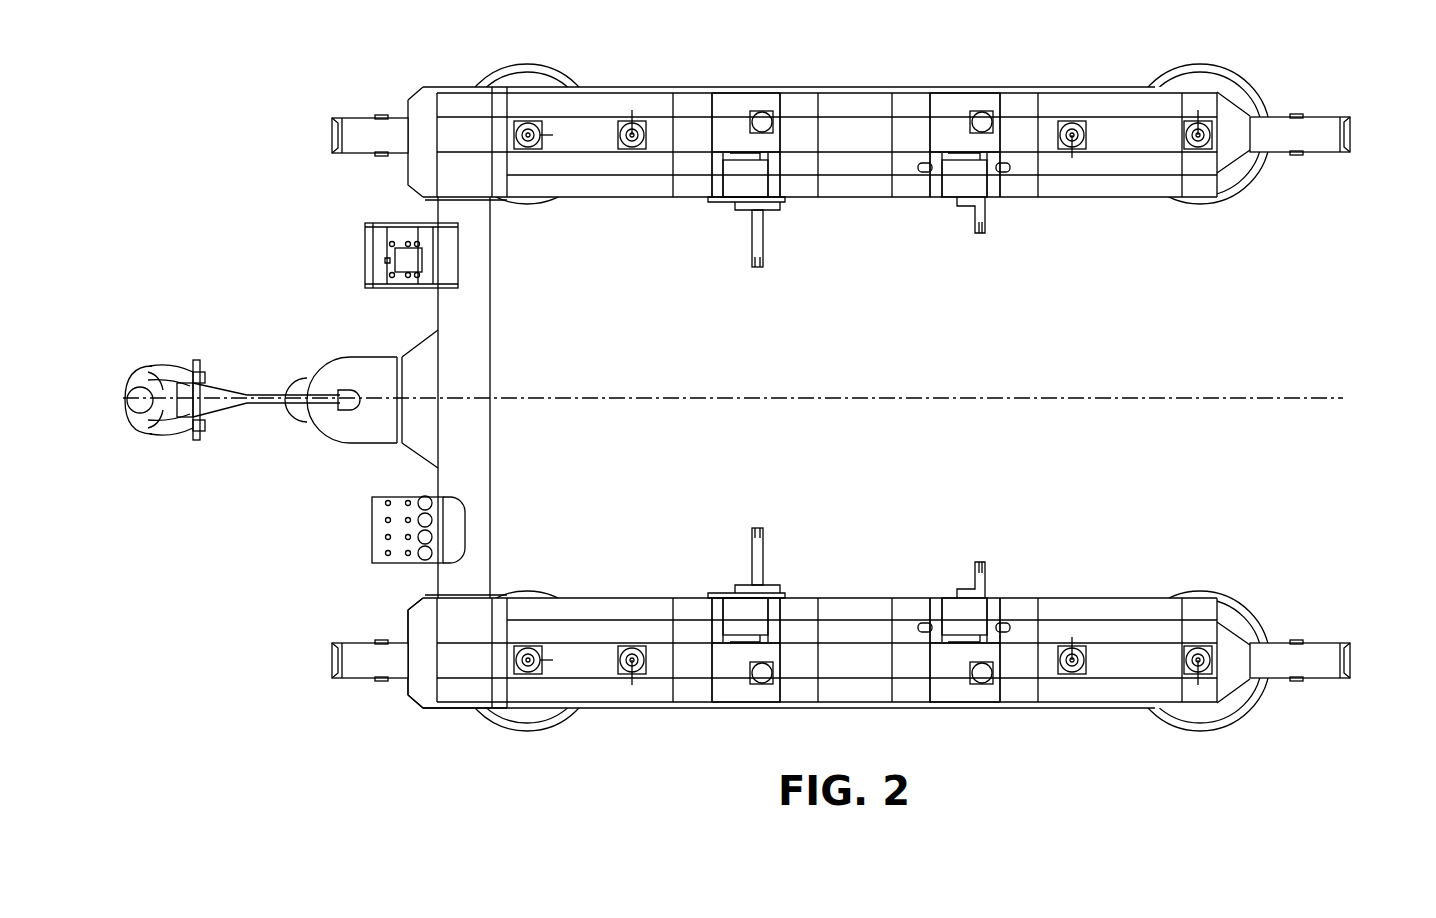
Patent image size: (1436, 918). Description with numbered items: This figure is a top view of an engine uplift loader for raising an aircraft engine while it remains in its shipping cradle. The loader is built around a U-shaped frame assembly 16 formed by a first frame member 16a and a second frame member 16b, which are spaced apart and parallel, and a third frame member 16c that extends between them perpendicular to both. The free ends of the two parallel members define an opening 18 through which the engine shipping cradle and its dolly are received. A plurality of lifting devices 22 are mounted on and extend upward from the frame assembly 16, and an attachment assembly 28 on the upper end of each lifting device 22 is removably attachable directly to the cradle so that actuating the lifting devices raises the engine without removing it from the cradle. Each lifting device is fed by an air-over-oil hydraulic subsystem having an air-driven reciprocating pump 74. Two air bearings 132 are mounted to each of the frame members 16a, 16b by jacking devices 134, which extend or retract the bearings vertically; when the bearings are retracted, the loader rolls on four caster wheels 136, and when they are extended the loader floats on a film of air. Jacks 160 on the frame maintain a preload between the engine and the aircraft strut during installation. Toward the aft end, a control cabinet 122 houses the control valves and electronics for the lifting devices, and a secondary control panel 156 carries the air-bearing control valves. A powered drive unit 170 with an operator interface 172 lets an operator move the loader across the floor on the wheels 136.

The frame assembly 16 is at (414, 706).
The first frame member 16a is at (868, 165).
The second frame member 16b is at (1130, 605).
The third frame member 16c is at (480, 320).
The opening 18 is at (1310, 378).
The lifting device 22 is at (738, 100).
The attachment assembly 28 is at (763, 245).
The air-driven reciprocating pump 74 is at (762, 112).
The control cabinet 122 is at (365, 251).
The air bearing 132 is at (533, 63).
The jacking device 134 is at (1198, 150).
The caster wheel 136 is at (332, 135).
The secondary control panel 156 is at (372, 530).
The jack 160 is at (1073, 150).
The powered drive unit 170 is at (350, 357).
The operator interface 172 is at (200, 408).